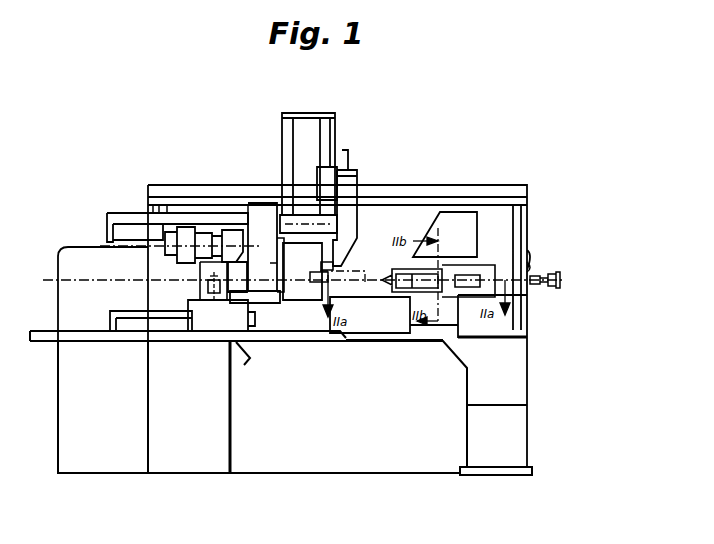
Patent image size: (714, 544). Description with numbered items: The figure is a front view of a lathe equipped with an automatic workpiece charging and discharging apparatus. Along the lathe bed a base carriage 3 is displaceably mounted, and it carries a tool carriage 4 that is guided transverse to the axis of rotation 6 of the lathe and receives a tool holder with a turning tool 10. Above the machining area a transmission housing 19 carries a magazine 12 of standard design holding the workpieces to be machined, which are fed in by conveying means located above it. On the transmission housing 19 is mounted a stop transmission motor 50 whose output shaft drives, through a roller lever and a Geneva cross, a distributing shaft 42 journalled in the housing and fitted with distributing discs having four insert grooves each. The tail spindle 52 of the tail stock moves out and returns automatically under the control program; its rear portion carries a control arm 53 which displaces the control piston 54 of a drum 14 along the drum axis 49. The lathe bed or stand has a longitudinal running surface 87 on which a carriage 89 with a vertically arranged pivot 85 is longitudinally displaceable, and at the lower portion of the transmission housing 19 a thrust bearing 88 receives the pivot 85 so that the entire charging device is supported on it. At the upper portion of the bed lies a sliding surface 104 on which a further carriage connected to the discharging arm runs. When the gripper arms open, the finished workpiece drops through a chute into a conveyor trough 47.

The base carriage 3 is at (406, 196).
The tool carriage 4 is at (348, 186).
The axis of rotation 6 is at (84, 280).
The turning tool 10 is at (343, 266).
The magazine 12 is at (306, 127).
The drum 14 is at (309, 298).
The transmission housing 19 is at (265, 213).
The distributing shaft 42 is at (306, 234).
The conveyor trough 47 is at (82, 331).
The drum axis 49 is at (276, 278).
The stop transmission motor 50 is at (185, 255).
The tail spindle 52 is at (399, 294).
The control arm 53 is at (428, 279).
The control piston 54 is at (331, 273).
The pivot 85 is at (229, 303).
The longitudinal running surface 87 is at (121, 311).
The thrust bearing 88 is at (198, 290).
The carriage 89 is at (241, 348).
The sliding surface 104 is at (132, 224).